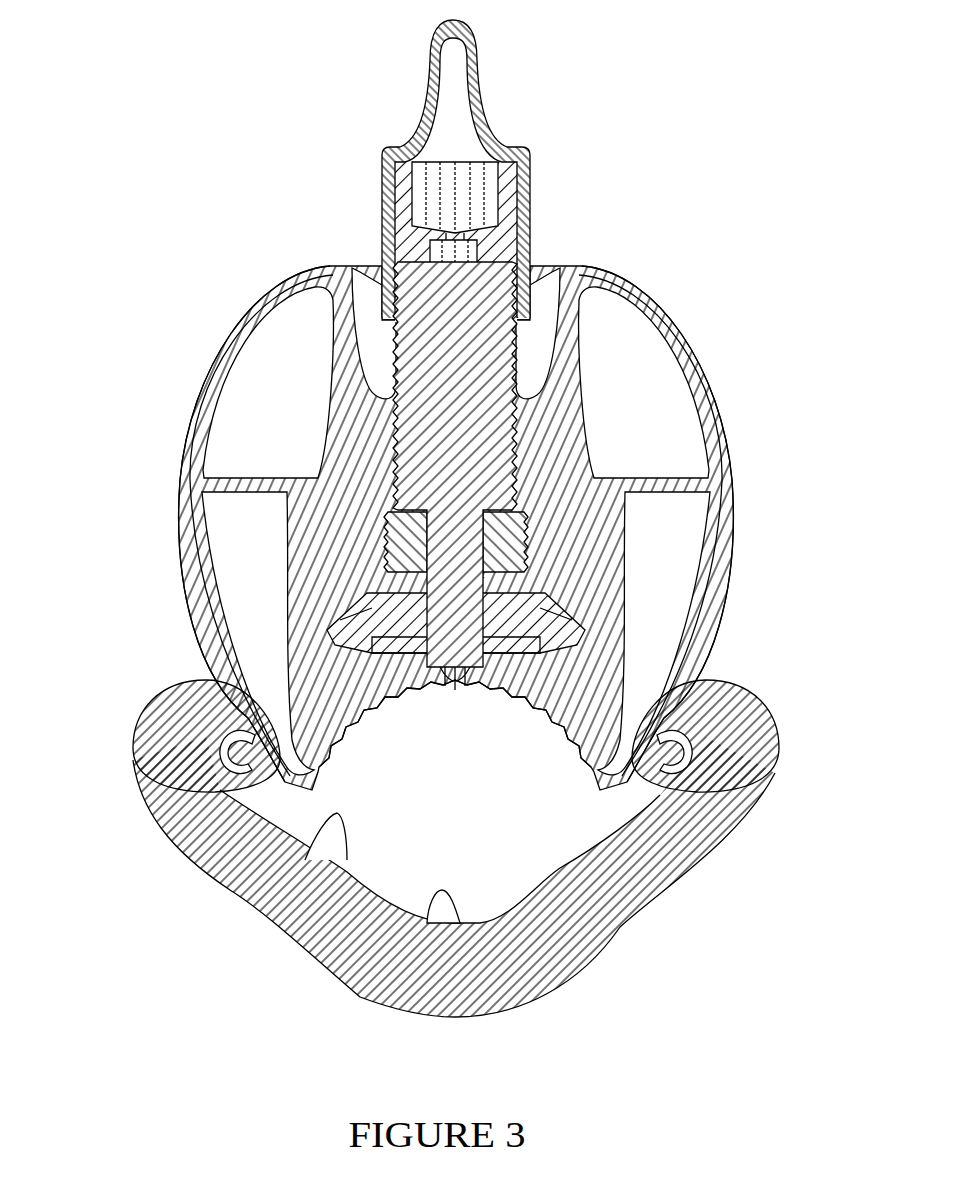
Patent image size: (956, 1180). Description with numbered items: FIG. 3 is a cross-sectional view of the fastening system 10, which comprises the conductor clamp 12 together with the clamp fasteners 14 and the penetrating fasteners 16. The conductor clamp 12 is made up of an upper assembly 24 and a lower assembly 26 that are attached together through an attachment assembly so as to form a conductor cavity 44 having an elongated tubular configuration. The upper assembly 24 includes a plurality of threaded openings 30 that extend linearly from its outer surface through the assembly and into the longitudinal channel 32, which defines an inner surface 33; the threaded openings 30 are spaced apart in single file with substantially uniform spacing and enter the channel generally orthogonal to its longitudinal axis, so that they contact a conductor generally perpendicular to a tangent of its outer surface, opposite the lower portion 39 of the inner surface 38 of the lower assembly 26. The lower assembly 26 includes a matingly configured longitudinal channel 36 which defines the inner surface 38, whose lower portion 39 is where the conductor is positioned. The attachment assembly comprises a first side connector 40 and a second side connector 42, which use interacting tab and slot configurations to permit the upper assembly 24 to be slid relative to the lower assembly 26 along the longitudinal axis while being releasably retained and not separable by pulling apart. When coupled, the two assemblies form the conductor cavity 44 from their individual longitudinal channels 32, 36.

The fastening system 10 is at (143, 126).
The conductor clamp 12 is at (107, 468).
The clamp fasteners 14 is at (547, 618).
The penetrating fasteners 16 is at (538, 192).
The upper assembly 24 is at (228, 312).
The lower assembly 26 is at (163, 765).
The threaded openings 30 is at (515, 467).
The longitudinal channel 32 is at (346, 607).
The inner surface 33 is at (593, 772).
The longitudinal channel 36 is at (515, 856).
The inner surface 38 is at (325, 828).
The lower portion 39 is at (428, 893).
The first side connector 40 is at (173, 722).
The second side connector 42 is at (700, 732).
The conductor cavity 44 is at (503, 822).